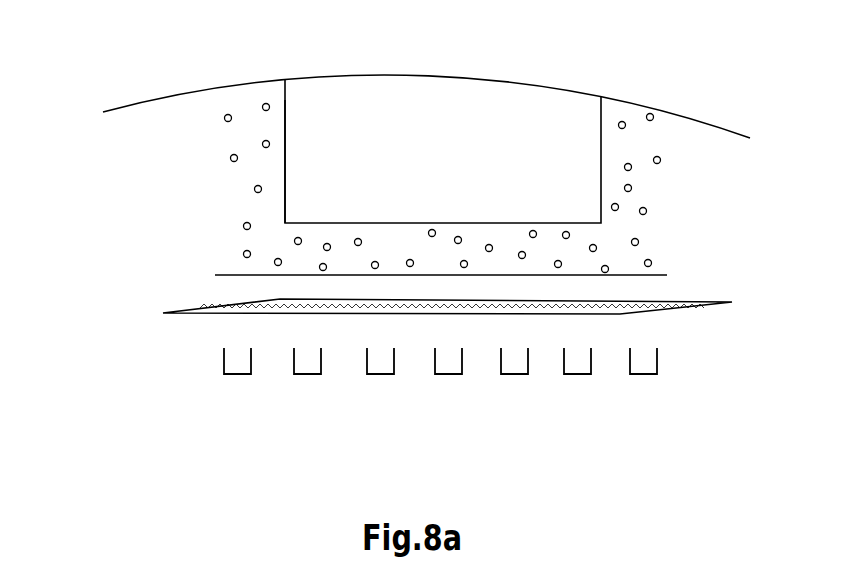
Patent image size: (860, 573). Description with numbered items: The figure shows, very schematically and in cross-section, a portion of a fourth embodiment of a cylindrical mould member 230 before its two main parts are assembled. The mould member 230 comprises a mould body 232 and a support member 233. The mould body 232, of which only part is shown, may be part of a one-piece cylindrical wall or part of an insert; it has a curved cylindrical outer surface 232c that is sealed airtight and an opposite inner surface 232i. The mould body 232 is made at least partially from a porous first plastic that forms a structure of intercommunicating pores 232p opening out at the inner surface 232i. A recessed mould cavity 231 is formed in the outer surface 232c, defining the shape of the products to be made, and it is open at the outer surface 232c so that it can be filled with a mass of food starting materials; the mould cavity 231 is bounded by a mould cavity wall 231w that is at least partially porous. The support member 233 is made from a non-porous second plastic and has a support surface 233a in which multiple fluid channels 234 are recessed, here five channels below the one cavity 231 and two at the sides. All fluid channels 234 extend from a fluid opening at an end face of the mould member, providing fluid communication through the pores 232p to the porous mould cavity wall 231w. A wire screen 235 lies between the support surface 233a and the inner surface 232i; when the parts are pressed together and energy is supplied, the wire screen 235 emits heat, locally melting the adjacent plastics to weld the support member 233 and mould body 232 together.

The mould member 230 is at (74, 356).
The mould cavity 231 is at (443, 151).
The mould cavity wall 231w is at (285, 170).
The mould body 232 is at (469, 193).
The cylindrical outer surface 232c is at (232, 85).
The pores 232p is at (262, 110).
The inner surface 232i is at (233, 273).
The support member 233 is at (459, 418).
The support surface 233a is at (723, 348).
The fluid channels 234 is at (640, 360).
The wire screen 235 is at (680, 300).